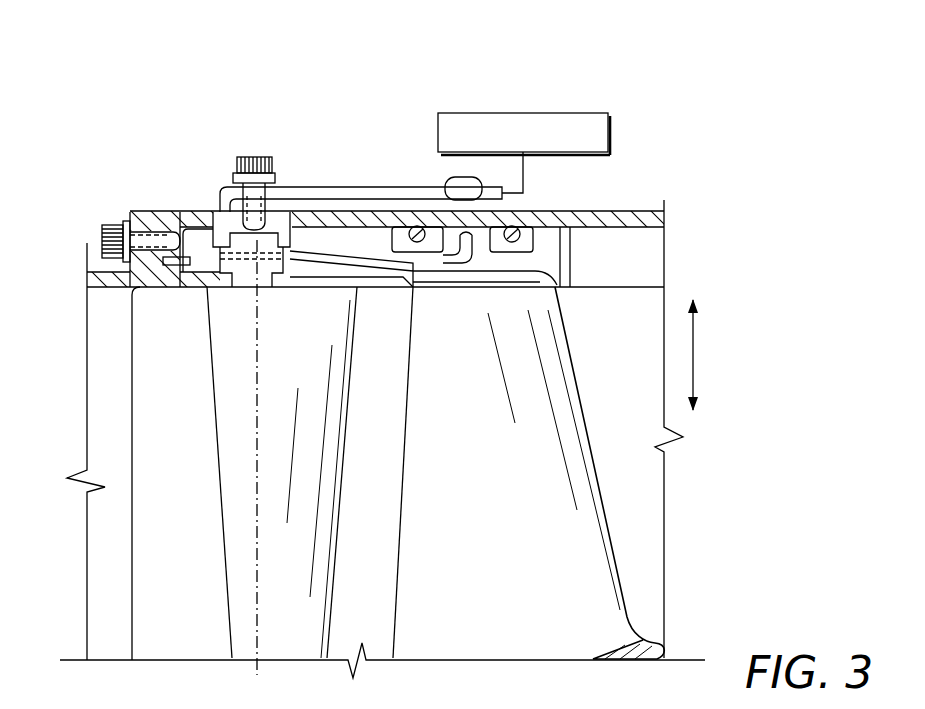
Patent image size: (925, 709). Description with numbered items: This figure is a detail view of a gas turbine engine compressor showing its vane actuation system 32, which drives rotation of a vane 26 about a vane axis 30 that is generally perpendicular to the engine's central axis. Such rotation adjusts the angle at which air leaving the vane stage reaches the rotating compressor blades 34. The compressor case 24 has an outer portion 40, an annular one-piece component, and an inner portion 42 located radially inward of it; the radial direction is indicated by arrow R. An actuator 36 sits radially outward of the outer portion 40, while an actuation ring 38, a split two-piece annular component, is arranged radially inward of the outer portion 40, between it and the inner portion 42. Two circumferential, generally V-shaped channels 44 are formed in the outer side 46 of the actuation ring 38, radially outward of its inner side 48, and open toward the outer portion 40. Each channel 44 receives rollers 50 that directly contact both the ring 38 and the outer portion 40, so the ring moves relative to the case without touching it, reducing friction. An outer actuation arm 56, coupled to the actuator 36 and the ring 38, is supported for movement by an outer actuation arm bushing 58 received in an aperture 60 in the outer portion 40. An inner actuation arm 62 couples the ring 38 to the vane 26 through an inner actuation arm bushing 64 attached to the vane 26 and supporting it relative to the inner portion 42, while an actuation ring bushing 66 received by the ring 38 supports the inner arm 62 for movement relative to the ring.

The compressor case 24 is at (695, 118).
The vane 26 is at (220, 503).
The vane axis 30 is at (257, 443).
The vane actuation system 32 is at (371, 132).
The compressor blade 34 is at (592, 443).
The actuator 36 is at (548, 112).
The actuation ring 38 is at (538, 243).
The outer portion 40 is at (640, 223).
The inner portion 42 is at (575, 277).
The channel 44 is at (507, 253).
The outer side 46 is at (433, 222).
The inner side 48 is at (517, 265).
The roller 50 is at (407, 226).
The outer actuation arm 56 is at (263, 190).
The outer actuation arm bushing 58 is at (273, 225).
The aperture 60 is at (211, 225).
The inner actuation arm 62 is at (327, 262).
The inner actuation arm bushing 64 is at (224, 283).
The actuation ring bushing 66 is at (478, 229).
The radial direction R is at (695, 358).